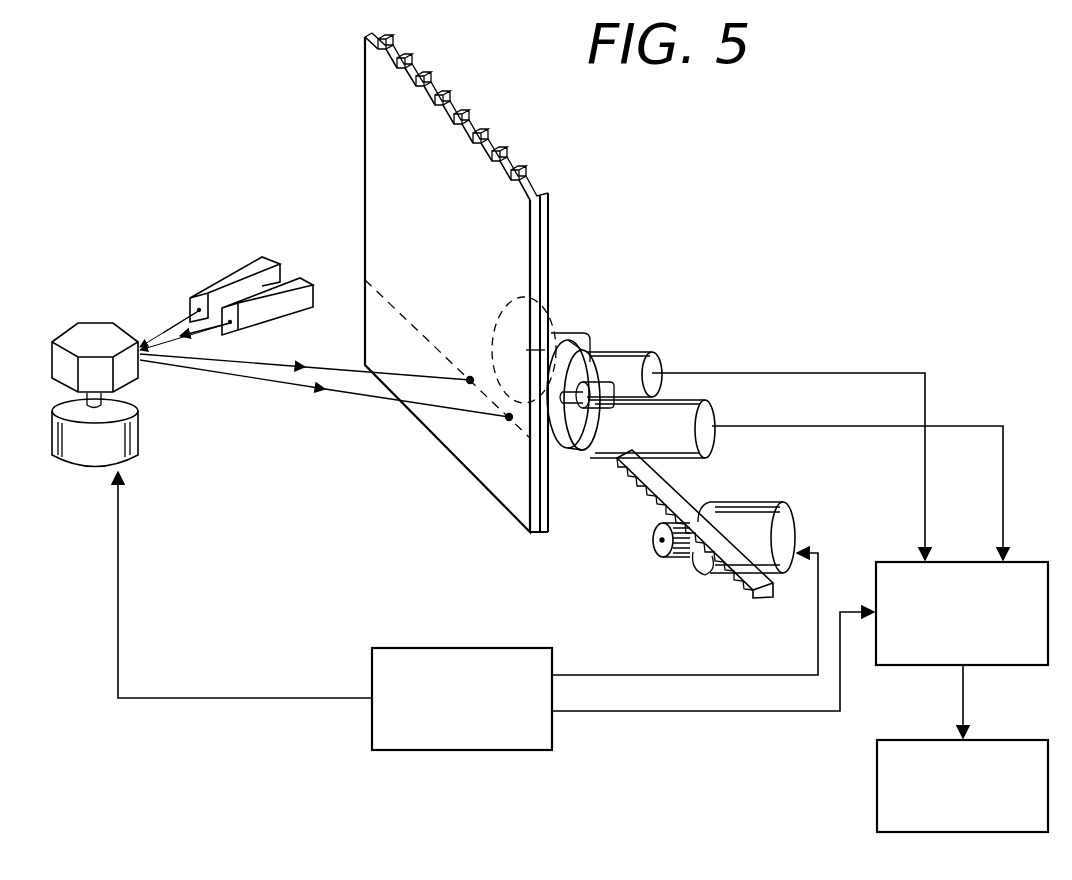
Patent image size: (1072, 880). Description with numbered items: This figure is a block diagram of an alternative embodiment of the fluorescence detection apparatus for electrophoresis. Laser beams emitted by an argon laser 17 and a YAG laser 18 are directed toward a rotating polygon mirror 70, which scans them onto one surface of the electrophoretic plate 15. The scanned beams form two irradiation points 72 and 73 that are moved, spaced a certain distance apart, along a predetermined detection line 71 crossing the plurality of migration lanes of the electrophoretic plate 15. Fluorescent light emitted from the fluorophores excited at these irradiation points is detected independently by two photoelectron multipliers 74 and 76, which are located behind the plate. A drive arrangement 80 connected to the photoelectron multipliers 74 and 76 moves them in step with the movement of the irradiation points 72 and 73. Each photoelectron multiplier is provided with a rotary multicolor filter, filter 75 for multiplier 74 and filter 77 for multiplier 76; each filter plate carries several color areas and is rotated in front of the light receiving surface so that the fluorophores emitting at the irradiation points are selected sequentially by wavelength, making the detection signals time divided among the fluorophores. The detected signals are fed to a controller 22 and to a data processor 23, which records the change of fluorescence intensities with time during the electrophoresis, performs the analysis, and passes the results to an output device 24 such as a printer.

The electrophoretic plate 15 is at (500, 120).
The argon laser 17 is at (225, 280).
The YAG laser 18 is at (290, 285).
The controller 22 is at (513, 648).
The data processor 23 is at (1027, 560).
The output device 24 is at (1017, 738).
The polygon mirror 70 is at (78, 323).
The detection line 71 is at (395, 305).
The irradiation point 72 is at (468, 383).
The irradiation point 73 is at (507, 420).
The photoelectron multiplier 74 is at (640, 350).
The rotary multicolor filter 75 is at (538, 273).
The photoelectron multiplier 76 is at (712, 410).
The rotary multicolor filter 77 is at (577, 372).
The drive arrangement 80 is at (785, 508).